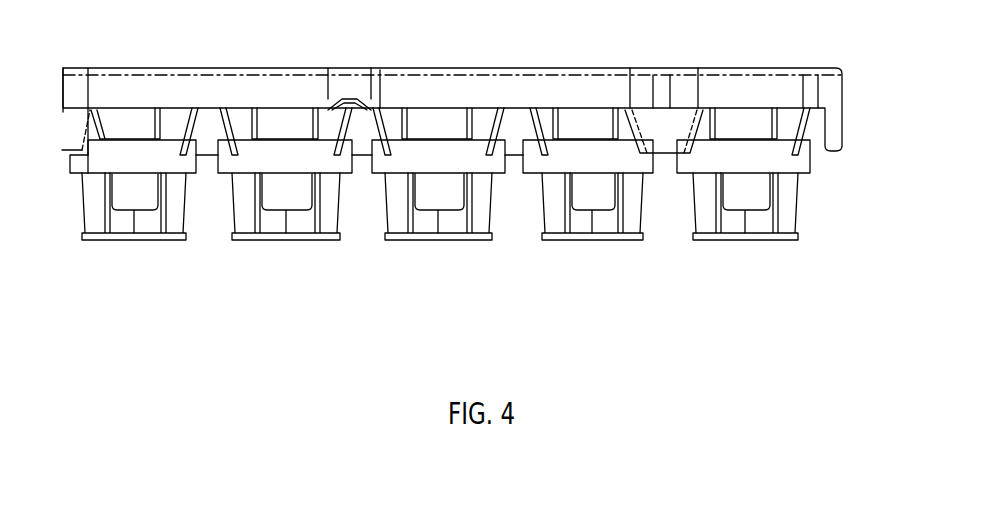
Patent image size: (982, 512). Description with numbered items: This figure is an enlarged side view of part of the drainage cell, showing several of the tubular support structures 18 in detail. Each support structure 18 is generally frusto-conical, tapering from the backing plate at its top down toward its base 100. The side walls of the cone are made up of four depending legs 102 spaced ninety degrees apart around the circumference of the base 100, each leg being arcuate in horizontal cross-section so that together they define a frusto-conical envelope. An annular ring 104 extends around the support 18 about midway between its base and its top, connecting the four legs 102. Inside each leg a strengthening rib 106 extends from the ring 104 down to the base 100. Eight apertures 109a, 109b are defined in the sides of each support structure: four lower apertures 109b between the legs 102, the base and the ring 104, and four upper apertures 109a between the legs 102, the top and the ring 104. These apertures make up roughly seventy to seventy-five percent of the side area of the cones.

The tubular support structure 18 is at (397, 183).
The base 100 is at (442, 240).
The depending legs 102 is at (242, 222).
The annular ring 104 is at (113, 158).
The strengthening rib 106 is at (272, 222).
The apertures 109a is at (588, 130).
The apertures 109b is at (188, 202).